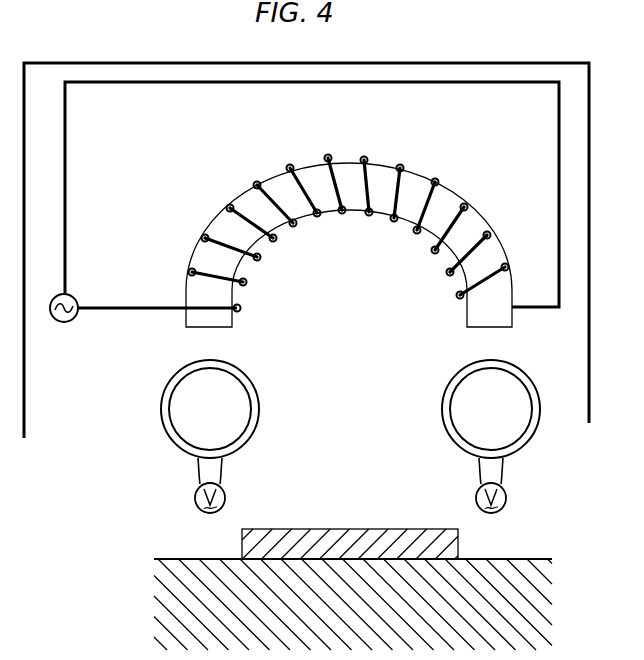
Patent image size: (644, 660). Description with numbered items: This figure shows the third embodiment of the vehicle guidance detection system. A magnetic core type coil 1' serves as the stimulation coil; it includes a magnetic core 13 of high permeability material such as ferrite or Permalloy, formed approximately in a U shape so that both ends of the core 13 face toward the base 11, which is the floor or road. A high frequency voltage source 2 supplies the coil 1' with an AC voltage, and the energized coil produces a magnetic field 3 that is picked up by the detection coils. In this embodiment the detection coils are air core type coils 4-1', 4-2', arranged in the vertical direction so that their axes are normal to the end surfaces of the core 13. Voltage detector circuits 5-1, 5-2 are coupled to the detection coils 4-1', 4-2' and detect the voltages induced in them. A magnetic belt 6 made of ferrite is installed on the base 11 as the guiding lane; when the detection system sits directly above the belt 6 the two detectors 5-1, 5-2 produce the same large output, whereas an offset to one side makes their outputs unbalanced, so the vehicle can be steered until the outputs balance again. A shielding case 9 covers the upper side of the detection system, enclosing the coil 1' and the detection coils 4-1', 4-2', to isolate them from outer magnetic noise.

The magnetic core type coil 1' is at (349, 227).
The magnetic core 13 is at (474, 230).
The high frequency voltage source 2 is at (56, 297).
The magnetic field 3 is at (227, 408).
The air core type detection coil 4-1' is at (240, 409).
The air core type detection coil 4-2' is at (457, 409).
The voltage detector circuit 5-1 is at (196, 503).
The voltage detector circuit 5-2 is at (507, 502).
The magnetic belt 6 is at (458, 540).
The shielding case 9 is at (589, 382).
The base 11 is at (155, 605).